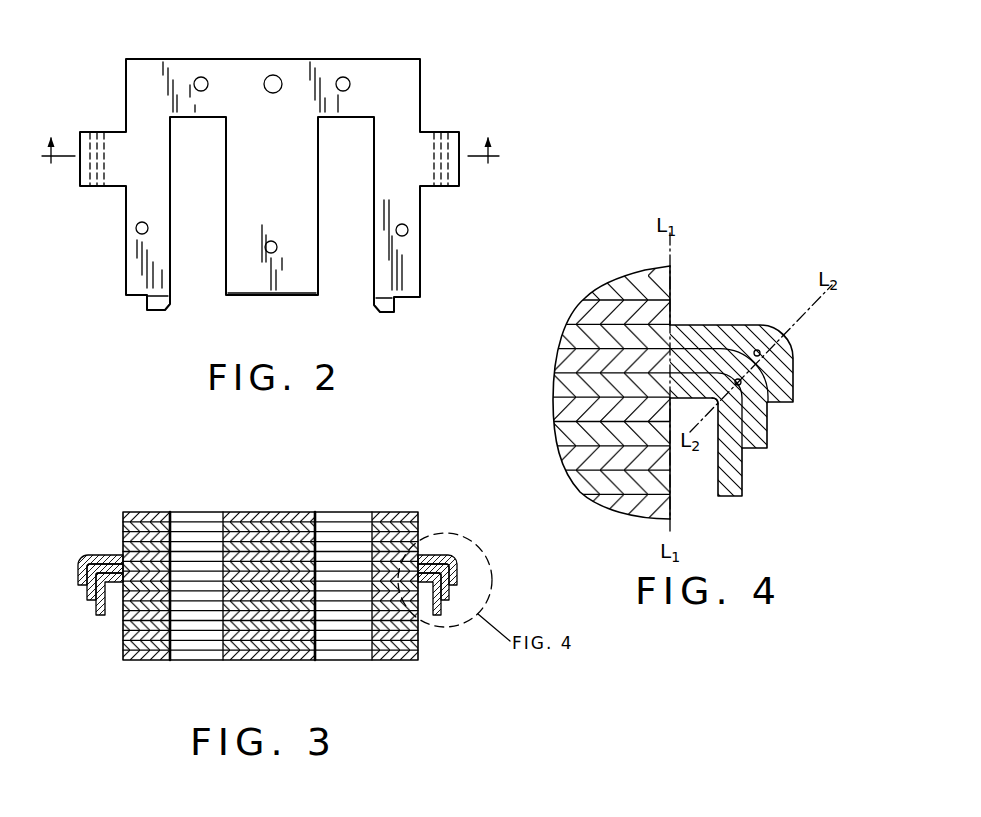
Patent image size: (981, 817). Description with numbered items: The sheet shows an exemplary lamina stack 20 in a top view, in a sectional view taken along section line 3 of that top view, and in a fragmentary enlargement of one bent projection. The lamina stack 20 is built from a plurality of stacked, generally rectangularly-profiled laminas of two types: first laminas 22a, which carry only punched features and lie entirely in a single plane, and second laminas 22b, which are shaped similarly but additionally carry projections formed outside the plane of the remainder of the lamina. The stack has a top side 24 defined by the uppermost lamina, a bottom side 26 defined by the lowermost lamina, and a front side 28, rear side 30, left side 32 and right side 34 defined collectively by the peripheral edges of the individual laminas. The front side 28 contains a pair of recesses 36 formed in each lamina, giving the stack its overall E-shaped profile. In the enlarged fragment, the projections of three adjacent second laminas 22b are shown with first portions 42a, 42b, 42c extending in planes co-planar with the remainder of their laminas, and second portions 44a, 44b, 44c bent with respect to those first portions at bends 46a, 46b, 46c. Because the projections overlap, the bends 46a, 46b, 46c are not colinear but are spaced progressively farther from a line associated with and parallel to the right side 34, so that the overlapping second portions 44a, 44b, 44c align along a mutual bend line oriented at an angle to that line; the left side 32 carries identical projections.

In FIG. 2, the lamina stack 20 is at (88, 97).
In FIG. 3, the lamina stack 20 is at (88, 511).
In FIG. 2, the first laminas 22a is at (418, 90).
In FIG. 3, the first laminas 22a is at (418, 521).
In FIG. 4, the first laminas 22a is at (652, 283).
In FIG. 3, the second laminas 22b is at (420, 562).
In FIG. 4, the second laminas 22b is at (567, 335).
In FIG. 3, the top side 24 is at (266, 508).
In FIG. 3, the bottom side 26 is at (256, 662).
In FIG. 2, the front side 28 is at (266, 299).
In FIG. 2, the rear side 30 is at (389, 57).
In FIG. 2, the left side 32 is at (124, 216).
In FIG. 2, the right side 34 is at (423, 222).
In FIG. 2, the recesses 36 is at (198, 278).
In FIG. 3, the recesses 36 is at (175, 641).
In FIG. 2, the section line 3- 3 is at (270, 136).
In FIG. 4, the first portion 42a is at (688, 382).
In FIG. 4, the first portion 42b is at (722, 357).
In FIG. 4, the first portion 42c is at (740, 328).
In FIG. 4, the second portion 44a is at (735, 476).
In FIG. 4, the second portion 44b is at (762, 422).
In FIG. 4, the second portion 44c is at (787, 375).
In FIG. 4, the bend 46a is at (716, 404).
In FIG. 4, the bend 46b is at (779, 339).
In FIG. 4, the bend 46c is at (758, 351).